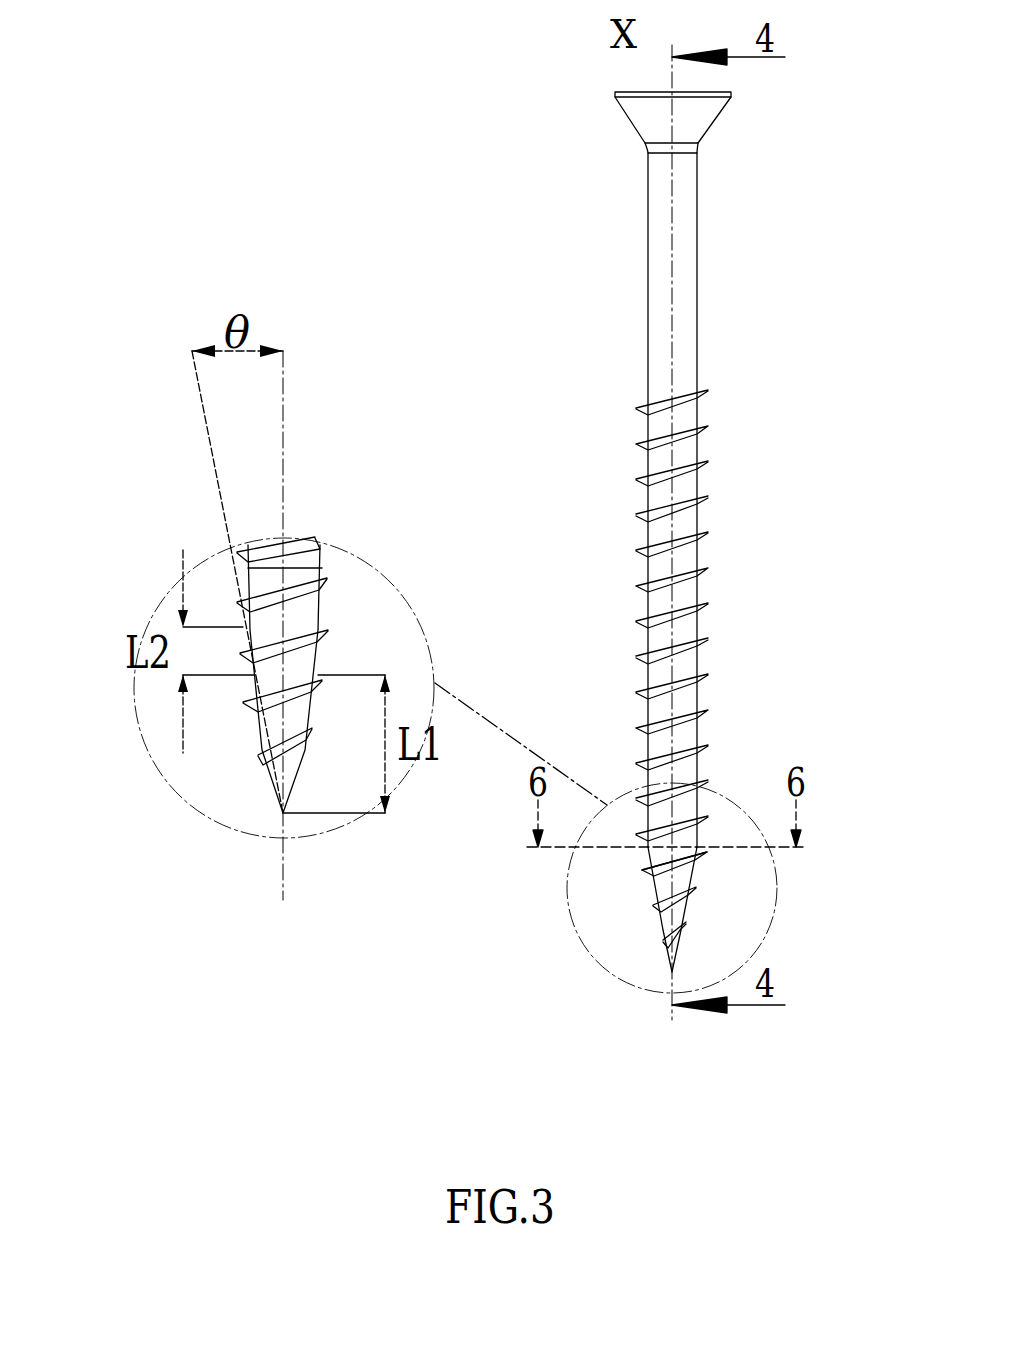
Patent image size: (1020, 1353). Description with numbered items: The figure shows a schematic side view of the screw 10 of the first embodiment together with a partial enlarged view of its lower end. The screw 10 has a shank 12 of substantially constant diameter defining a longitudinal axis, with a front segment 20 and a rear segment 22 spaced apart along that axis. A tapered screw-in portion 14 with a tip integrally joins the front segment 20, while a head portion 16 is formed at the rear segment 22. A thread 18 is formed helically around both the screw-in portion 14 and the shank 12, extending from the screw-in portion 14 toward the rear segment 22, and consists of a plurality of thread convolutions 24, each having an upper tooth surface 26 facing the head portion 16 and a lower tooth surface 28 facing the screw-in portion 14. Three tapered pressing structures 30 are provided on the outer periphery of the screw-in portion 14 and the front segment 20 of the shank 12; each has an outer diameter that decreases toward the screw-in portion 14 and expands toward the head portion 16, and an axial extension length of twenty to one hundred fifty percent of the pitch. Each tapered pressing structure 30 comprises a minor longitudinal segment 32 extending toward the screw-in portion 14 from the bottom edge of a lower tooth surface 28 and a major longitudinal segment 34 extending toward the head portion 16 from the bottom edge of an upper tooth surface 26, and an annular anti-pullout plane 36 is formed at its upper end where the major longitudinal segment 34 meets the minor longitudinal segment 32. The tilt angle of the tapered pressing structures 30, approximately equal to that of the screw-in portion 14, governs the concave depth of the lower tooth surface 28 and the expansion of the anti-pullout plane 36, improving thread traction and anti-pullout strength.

The screw 10 is at (627, 333).
The shank 12 is at (685, 288).
The screw-in portion 14 is at (665, 942).
The head portion 16 is at (692, 117).
The thread 18 is at (703, 503).
The front segment 20 is at (320, 538).
The rear segment 22 is at (662, 187).
The thread convolution 24 is at (703, 575).
The upper tooth surface 26 is at (697, 668).
The lower tooth surface 28 is at (700, 682).
The tapered pressing structure 30 is at (325, 628).
The minor longitudinal segment 32 is at (330, 573).
The major longitudinal segment 34 is at (312, 668).
The annular anti-pullout plane 36 is at (648, 888).